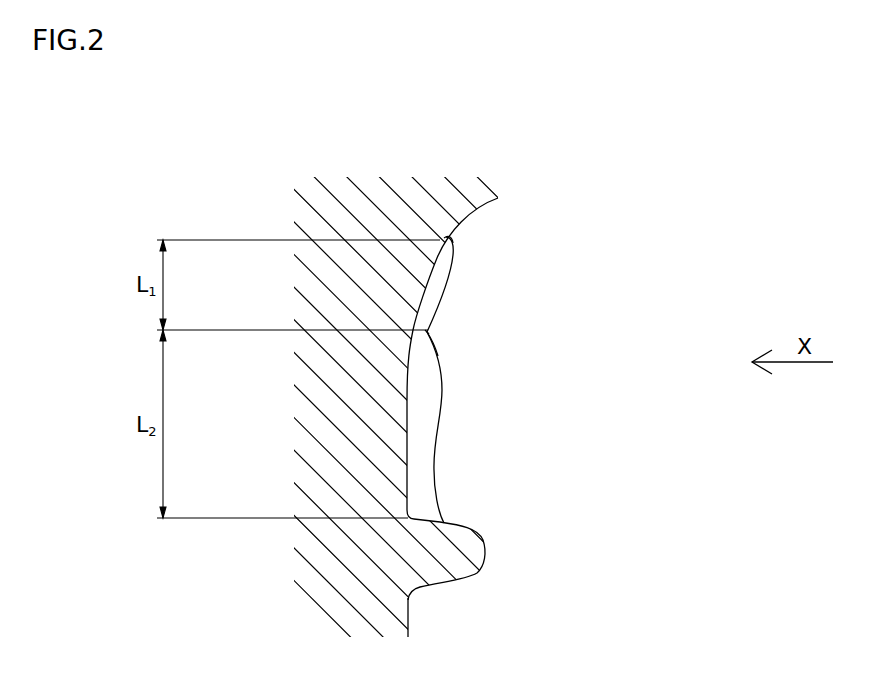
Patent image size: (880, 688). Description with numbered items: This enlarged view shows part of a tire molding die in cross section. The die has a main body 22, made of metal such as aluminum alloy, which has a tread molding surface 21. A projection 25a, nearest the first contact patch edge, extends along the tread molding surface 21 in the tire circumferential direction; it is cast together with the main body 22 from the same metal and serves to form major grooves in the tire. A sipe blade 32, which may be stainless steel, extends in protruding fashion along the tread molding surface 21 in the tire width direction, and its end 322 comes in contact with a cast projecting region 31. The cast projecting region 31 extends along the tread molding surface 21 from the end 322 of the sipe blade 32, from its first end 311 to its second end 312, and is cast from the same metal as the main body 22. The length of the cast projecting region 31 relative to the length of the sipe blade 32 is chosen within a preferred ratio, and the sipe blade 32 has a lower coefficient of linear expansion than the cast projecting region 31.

The tread molding surface 21 is at (408, 608).
The main body 22 is at (322, 378).
The projection 25a is at (485, 550).
The cast projecting region 31 is at (438, 285).
The first end 311 is at (423, 327).
The second end 312 is at (453, 247).
The sipe blade 32 is at (433, 428).
The end 322 is at (428, 334).